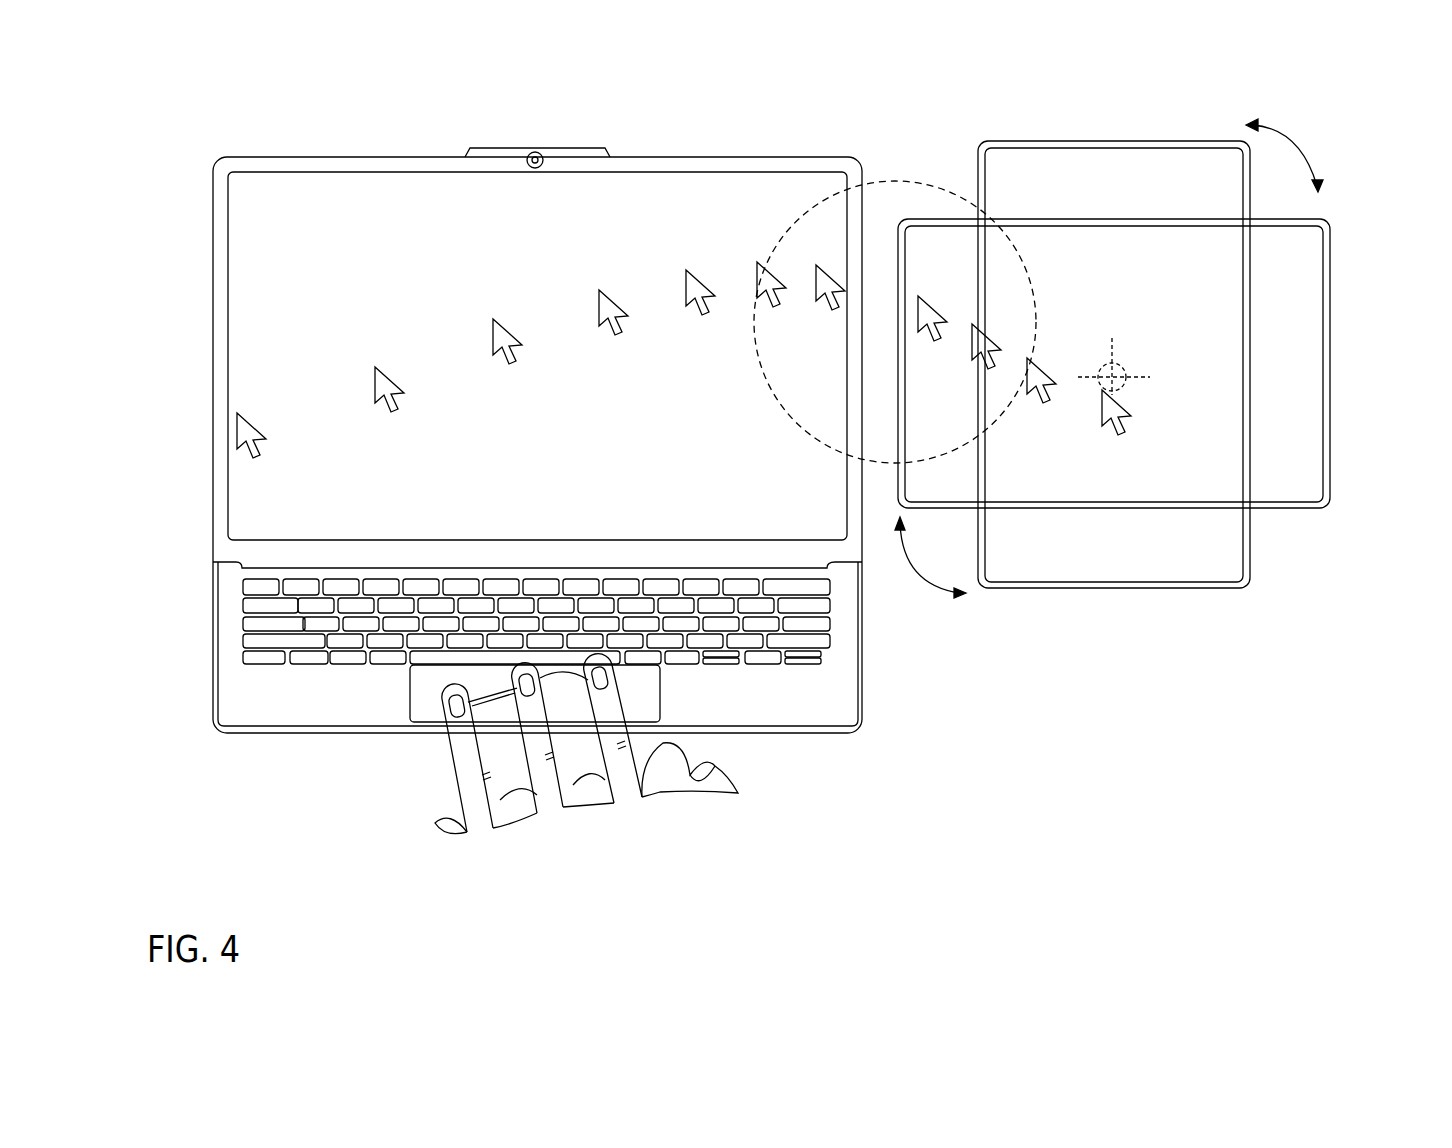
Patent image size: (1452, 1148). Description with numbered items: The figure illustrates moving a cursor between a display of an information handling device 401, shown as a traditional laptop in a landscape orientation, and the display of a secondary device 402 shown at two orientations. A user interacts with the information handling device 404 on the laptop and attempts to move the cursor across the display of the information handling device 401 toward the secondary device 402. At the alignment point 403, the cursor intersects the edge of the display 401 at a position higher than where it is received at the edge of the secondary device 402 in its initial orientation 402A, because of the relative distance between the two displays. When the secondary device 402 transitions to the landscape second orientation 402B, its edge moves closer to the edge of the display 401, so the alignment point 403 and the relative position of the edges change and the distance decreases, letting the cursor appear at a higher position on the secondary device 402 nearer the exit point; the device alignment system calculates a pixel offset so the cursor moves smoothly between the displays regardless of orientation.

The display of the information handling device 401 is at (400, 305).
The secondary device 402 is at (1108, 113).
The initial orientation 402A is at (1122, 566).
The second orientation 402B is at (1305, 431).
The alignment point 403 is at (905, 166).
The user interaction with the information handling device 404 is at (437, 705).